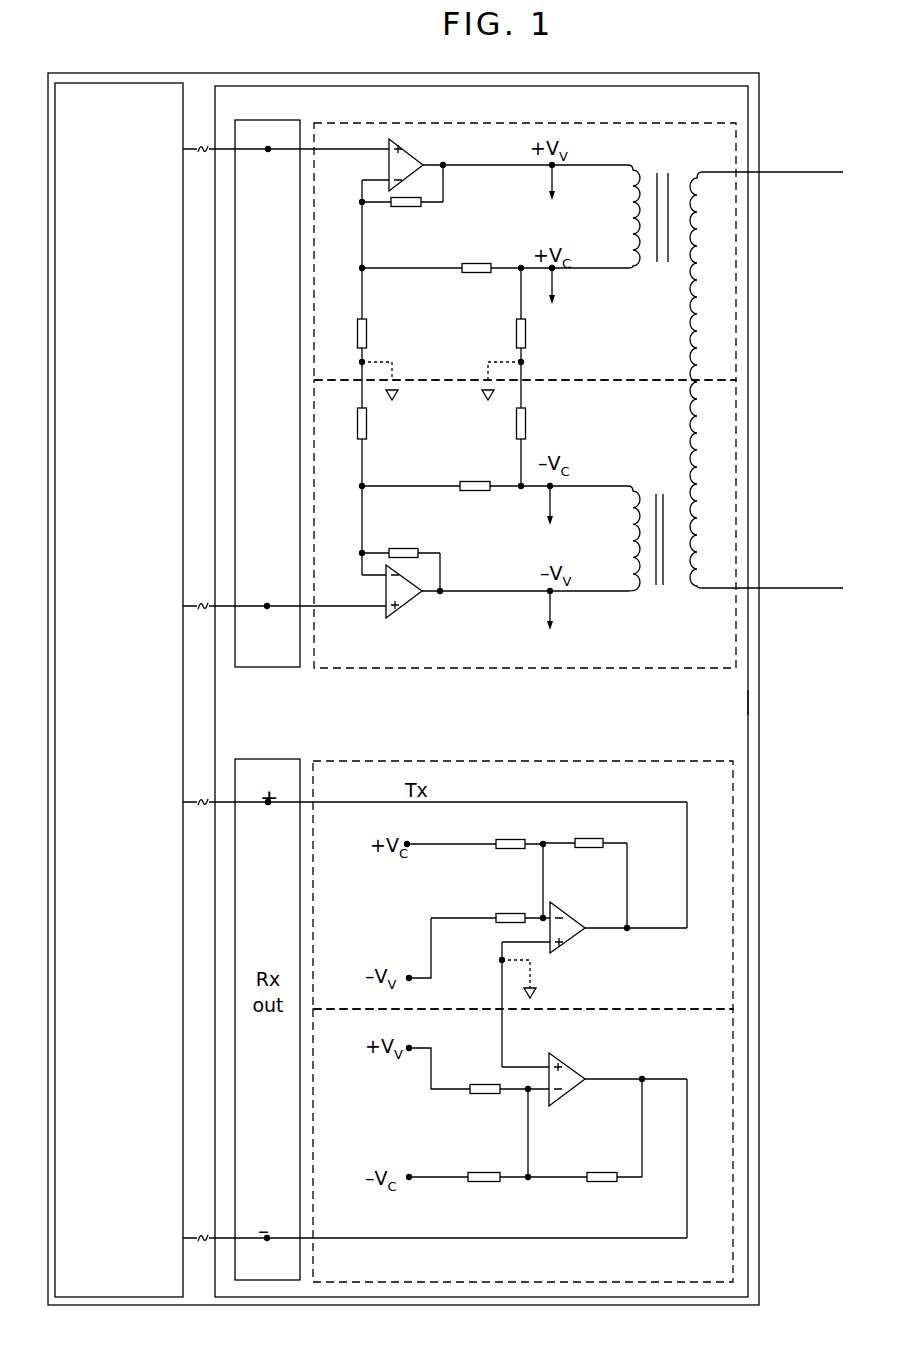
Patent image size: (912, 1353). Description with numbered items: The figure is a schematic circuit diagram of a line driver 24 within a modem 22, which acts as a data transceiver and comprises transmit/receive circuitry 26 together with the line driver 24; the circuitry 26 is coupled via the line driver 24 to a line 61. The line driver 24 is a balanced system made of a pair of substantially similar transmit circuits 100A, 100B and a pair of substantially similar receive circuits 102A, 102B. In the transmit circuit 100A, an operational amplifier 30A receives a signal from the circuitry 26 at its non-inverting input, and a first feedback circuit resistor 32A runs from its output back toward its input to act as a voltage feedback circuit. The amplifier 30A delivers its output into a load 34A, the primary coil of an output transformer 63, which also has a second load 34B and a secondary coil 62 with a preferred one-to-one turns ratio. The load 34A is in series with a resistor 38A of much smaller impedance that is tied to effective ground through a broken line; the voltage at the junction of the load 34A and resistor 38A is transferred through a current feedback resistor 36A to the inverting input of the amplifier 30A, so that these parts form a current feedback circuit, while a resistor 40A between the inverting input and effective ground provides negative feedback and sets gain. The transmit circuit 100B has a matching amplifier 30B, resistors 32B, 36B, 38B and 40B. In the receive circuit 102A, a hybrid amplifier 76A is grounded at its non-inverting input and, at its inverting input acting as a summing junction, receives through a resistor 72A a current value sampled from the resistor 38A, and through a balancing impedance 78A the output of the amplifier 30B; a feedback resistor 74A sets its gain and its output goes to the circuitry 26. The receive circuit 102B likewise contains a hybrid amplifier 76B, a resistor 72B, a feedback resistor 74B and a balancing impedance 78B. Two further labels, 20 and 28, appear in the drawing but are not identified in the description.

The line interface system 20 is at (816, 1023).
The modem 22 is at (749, 727).
The line driver 24 is at (747, 702).
The transmit/receive circuitry 26 is at (108, 83).
The transmit input 28 is at (272, 121).
The operational amplifier 30A is at (420, 158).
The operational amplifier 30B is at (404, 608).
The first feedback circuit resistor Rvf 32A is at (421, 204).
The feedback circuit resistor Rvf 32B is at (418, 550).
The load 34A is at (632, 198).
The second load 34B is at (632, 522).
The current feedback resistor Rcf 36A is at (473, 266).
The current feedback resistor Rcf 36B is at (476, 491).
The resistor Rs 38A is at (526, 333).
The resistor Rs 38B is at (526, 428).
The resistor Rg 40A is at (366, 335).
The resistor Rg 40B is at (366, 430).
The line 61 is at (774, 395).
The secondary coil 62 is at (689, 353).
The output transformer 63 is at (660, 592).
The resistor Rrx 72A is at (499, 839).
The resistor Rrx 72B is at (490, 1183).
The feedback resistor Rxgain 74A is at (592, 850).
The feedback resistor Rxgain 74B is at (604, 1183).
The hybrid amplifier 76A is at (572, 943).
The hybrid amplifier 76B is at (572, 1065).
The balancing impedance Zbal 78A is at (498, 913).
The balancing impedance Zbal 78B is at (486, 1085).
The transmit circuit 100A is at (664, 122).
The transmit circuit 100B is at (568, 669).
The receive circuit 102A is at (660, 762).
The receive circuit 102B is at (657, 1281).